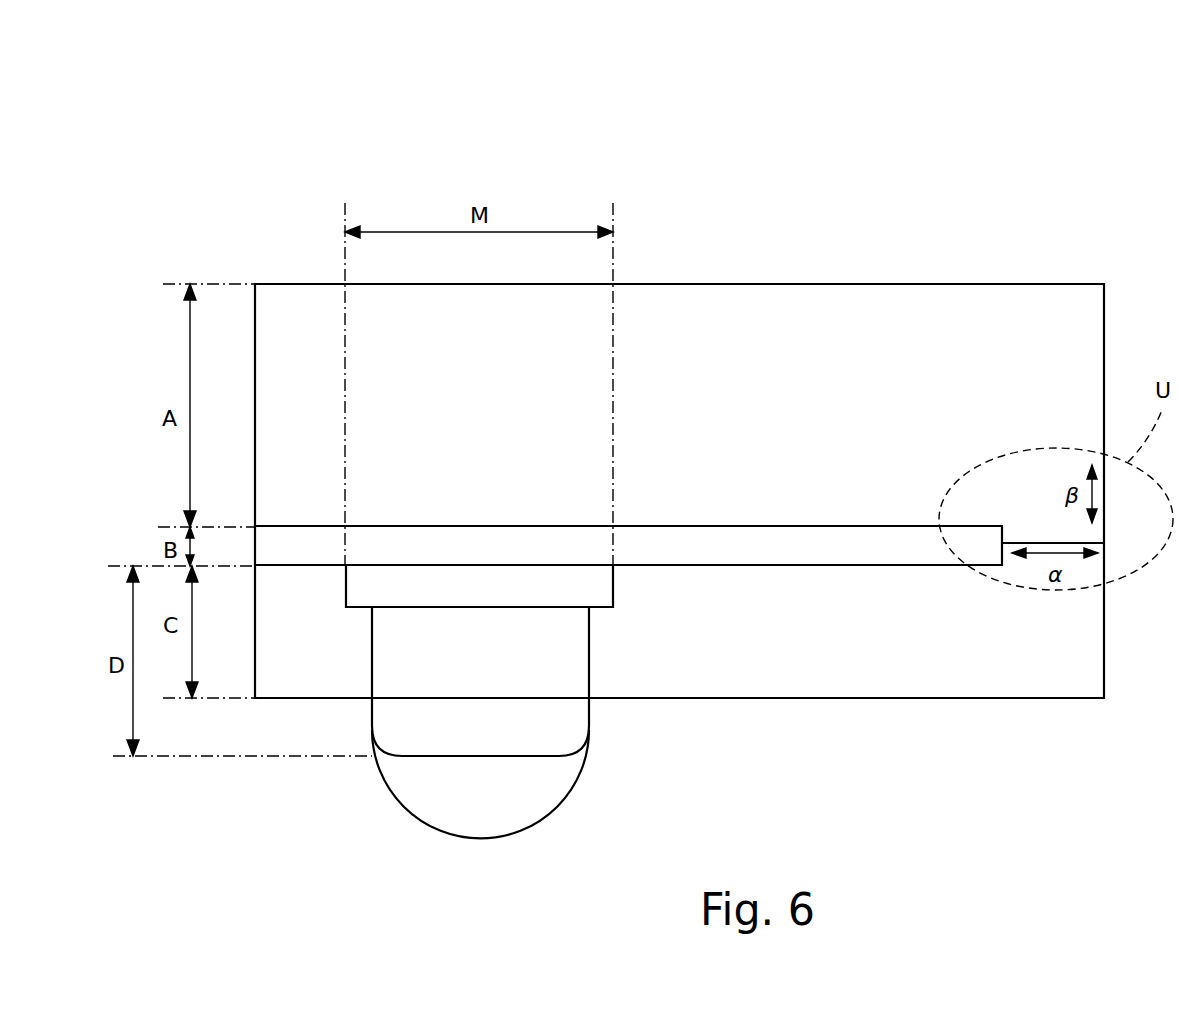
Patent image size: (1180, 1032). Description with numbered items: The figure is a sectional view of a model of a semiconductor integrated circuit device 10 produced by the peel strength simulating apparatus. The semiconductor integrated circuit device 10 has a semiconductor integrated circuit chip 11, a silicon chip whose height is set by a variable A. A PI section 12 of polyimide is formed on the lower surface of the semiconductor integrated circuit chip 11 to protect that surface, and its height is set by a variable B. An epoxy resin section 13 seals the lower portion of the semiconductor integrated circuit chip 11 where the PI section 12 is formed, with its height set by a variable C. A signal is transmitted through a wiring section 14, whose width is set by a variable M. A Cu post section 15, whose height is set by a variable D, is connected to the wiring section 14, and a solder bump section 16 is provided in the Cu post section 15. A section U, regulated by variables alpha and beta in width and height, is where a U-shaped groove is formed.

The semiconductor integrated circuit device 10 is at (784, 152).
The semiconductor integrated circuit chip 11 is at (882, 300).
The PI section 12 is at (808, 545).
The epoxy resin section 13 is at (802, 665).
The wiring section 14 is at (583, 585).
The Cu post section 15 is at (548, 715).
The solder bump section 16 is at (548, 788).